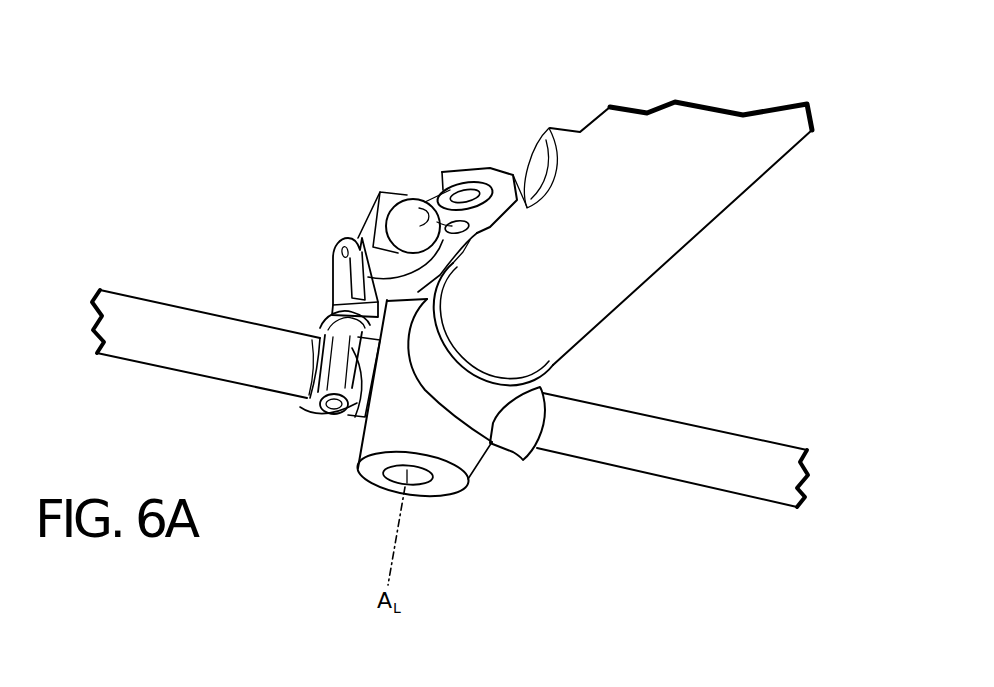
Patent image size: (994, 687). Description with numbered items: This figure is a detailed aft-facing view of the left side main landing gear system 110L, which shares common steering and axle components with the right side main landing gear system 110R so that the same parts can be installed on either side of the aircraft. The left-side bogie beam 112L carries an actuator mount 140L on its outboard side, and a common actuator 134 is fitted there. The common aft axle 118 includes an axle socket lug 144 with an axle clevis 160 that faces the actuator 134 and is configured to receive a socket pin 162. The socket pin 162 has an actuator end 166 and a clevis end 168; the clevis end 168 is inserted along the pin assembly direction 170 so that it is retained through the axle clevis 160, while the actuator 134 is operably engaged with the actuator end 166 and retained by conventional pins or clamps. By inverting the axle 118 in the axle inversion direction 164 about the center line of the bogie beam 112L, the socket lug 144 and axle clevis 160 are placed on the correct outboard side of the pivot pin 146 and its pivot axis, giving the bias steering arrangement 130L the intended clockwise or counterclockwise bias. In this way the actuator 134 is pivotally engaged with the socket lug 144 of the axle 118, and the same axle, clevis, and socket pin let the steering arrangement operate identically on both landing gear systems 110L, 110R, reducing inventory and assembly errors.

The left side main landing gear system 110L is at (618, 82).
The right side main landing gear system 110R is at (203, 676).
The left-side bogie beam 112L is at (663, 337).
The aft axle 118 is at (84, 322).
The bias steering arrangement 130L is at (168, 212).
The actuator 134 is at (471, 182).
The actuator mount 140L is at (442, 172).
The axle socket lug 144 is at (296, 320).
The pivot pin 146 is at (422, 480).
The axle clevis 160 is at (313, 397).
The socket pin 162 is at (317, 291).
The axle inversion direction 164 is at (323, 535).
The actuator end 166 is at (332, 270).
The clevis end 168 is at (352, 432).
The pin assembly direction 170 is at (367, 200).